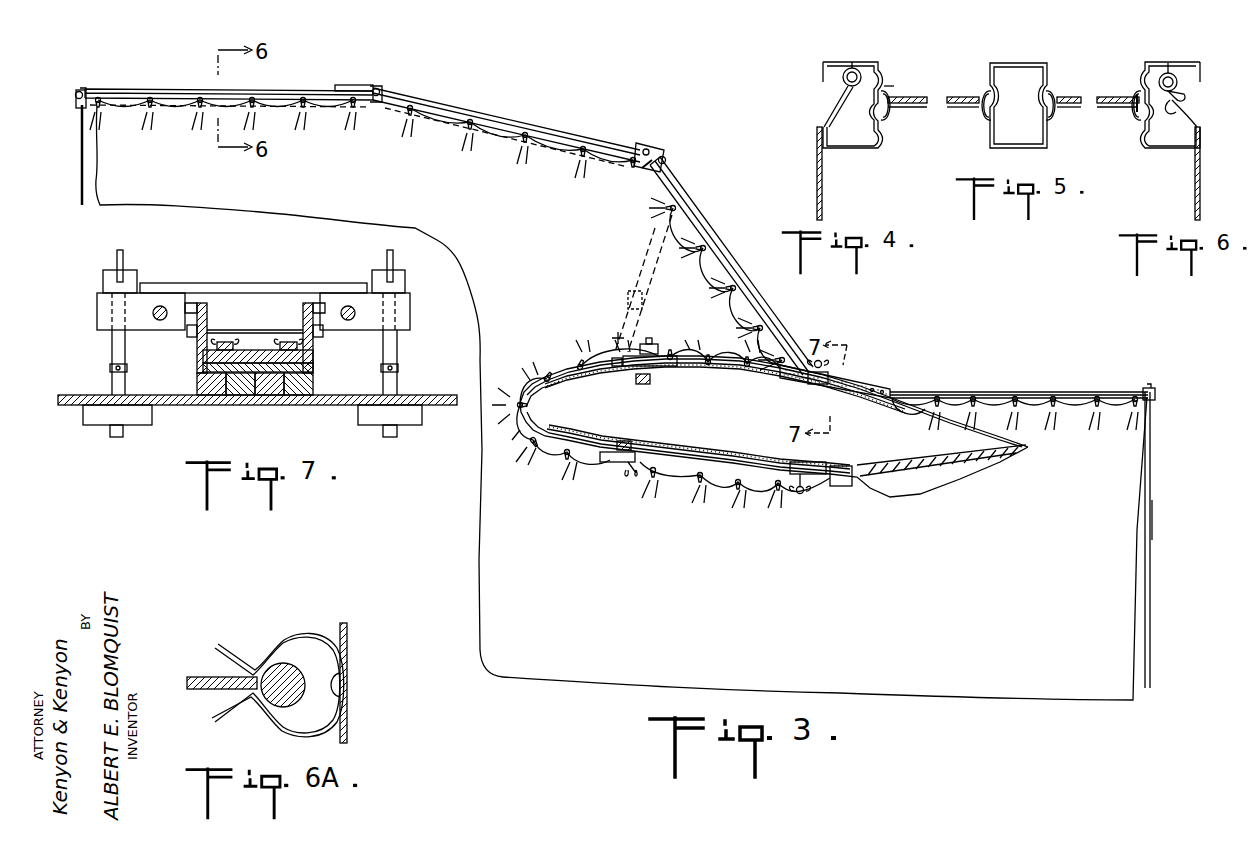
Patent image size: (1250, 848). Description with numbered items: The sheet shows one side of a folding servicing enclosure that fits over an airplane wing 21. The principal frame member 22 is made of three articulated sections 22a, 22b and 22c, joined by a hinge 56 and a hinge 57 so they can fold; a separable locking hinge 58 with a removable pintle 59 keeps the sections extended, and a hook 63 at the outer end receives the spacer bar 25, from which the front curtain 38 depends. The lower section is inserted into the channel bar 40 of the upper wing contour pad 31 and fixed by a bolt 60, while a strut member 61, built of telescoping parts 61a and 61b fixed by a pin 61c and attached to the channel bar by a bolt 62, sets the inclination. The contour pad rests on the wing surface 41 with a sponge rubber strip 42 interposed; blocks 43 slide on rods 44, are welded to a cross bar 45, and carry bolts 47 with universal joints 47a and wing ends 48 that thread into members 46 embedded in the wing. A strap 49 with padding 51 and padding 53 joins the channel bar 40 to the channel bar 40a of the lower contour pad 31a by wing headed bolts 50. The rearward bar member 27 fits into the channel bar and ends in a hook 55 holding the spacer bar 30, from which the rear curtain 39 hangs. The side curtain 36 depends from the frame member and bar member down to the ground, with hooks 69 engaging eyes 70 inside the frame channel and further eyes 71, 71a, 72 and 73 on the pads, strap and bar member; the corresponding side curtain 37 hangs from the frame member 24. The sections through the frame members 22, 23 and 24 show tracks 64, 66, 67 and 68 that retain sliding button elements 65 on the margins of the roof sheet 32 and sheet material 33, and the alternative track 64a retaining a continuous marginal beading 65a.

In FIG. 3, the airplane wing 21 is at (863, 487).
In FIG. 3, the frame member 22 is at (498, 110).
In FIG. 6, the frame member 22 is at (1185, 63).
In FIG. 6A, the frame member 22 is at (347, 640).
In FIG. 3, the frame member section 22a is at (707, 228).
In FIG. 3, the frame member section 22b is at (553, 133).
In FIG. 3, the frame member section 22c is at (287, 88).
In FIG. 5, the center frame member 23 is at (1023, 63).
In FIG. 4, the frame member 24 is at (865, 62).
In FIG. 3, the spacer bar 25 is at (81, 88).
In FIG. 3, the bar member 27 is at (1043, 392).
In FIG. 3, the spacer bar 30 is at (1148, 391).
In FIG. 3, the wing contour pad 31 is at (766, 364).
In FIG. 3, the wing contour pad 31a is at (684, 481).
In FIG. 5, the sheet 32 is at (1070, 97).
In FIG. 6, the sheet 32 is at (1110, 97).
In FIG. 6A, the sheet 32 is at (200, 677).
In FIG. 4, the sheet material 33 is at (910, 97).
In FIG. 5, the sheet material 33 is at (960, 97).
In FIG. 3, the side curtain 36 is at (487, 558).
In FIG. 6, the side curtain 36 is at (1202, 183).
In FIG. 4, the side curtain 37 is at (817, 183).
In FIG. 3, the front curtain 38 is at (80, 175).
In FIG. 3, the curtain 39 is at (1155, 525).
In FIG. 3, the channel bar 40 is at (693, 360).
In FIG. 7, the channel bar 40 is at (197, 349).
In FIG. 3, the channel bar 40a is at (720, 477).
In FIG. 7, the surface 41 is at (323, 405).
In FIG. 3, the strip of padding material 42 is at (843, 390).
In FIG. 7, the strip of padding material 42 is at (260, 395).
In FIG. 3, the blocks 43 is at (663, 352).
In FIG. 7, the blocks 43 is at (97, 316).
In FIG. 7, the rods 44 is at (320, 310).
In FIG. 7, the cross bar 45 is at (163, 287).
In FIG. 3, the members 46 is at (643, 380).
In FIG. 7, the members 46 is at (410, 427).
In FIG. 7, the bolts 47 is at (397, 348).
In FIG. 7, the universal joints 47a is at (110, 368).
In FIG. 3, the wing ends 48 is at (645, 353).
In FIG. 7, the wing ends 48 is at (400, 273).
In FIG. 3, the strap 49 is at (570, 383).
In FIG. 7, the strap 49 is at (252, 342).
In FIG. 7, the wing headed bolts 50 is at (287, 340).
In FIG. 7, the padding 51 is at (313, 365).
In FIG. 3, the padding 53 is at (533, 407).
In FIG. 3, the hook 55 is at (1155, 395).
In FIG. 3, the hinge 56 is at (637, 167).
In FIG. 3, the hinge 57 is at (397, 92).
In FIG. 3, the separable locking hinge 58 is at (650, 147).
In FIG. 3, the removable pintle 59 is at (664, 150).
In FIG. 3, the bolt 60 is at (795, 373).
In FIG. 7, the bolt 60 is at (313, 341).
In FIG. 3, the strut member 61 is at (647, 270).
In FIG. 3, the telescopic part 61a is at (650, 248).
In FIG. 3, the telescopic part 61b is at (618, 337).
In FIG. 3, the pin 61c is at (630, 300).
In FIG. 3, the bolt 62 is at (623, 390).
In FIG. 3, the hook 63 is at (74, 96).
In FIG. 6, the track 64 is at (1138, 130).
In FIG. 6A, the track 64a is at (282, 652).
In FIG. 4, the button elements 65 is at (893, 113).
In FIG. 5, the button elements 65 is at (977, 113).
In FIG. 6, the button elements 65 is at (1132, 117).
In FIG. 6A, the marginal enlarged beading 65a is at (312, 682).
In FIG. 5, the track 66 is at (1055, 87).
In FIG. 5, the retaining track 67 is at (980, 87).
In FIG. 4, the retaining track 68 is at (895, 90).
In FIG. 3, the hooks 69 is at (560, 150).
In FIG. 6, the hooks 69 is at (1187, 110).
In FIG. 6, the eyes 70 is at (1186, 87).
In FIG. 3, the eyes 71 is at (720, 377).
In FIG. 3, the eyes 71a is at (743, 480).
In FIG. 3, the eyes 72 is at (537, 447).
In FIG. 3, the eyes 73 is at (973, 392).